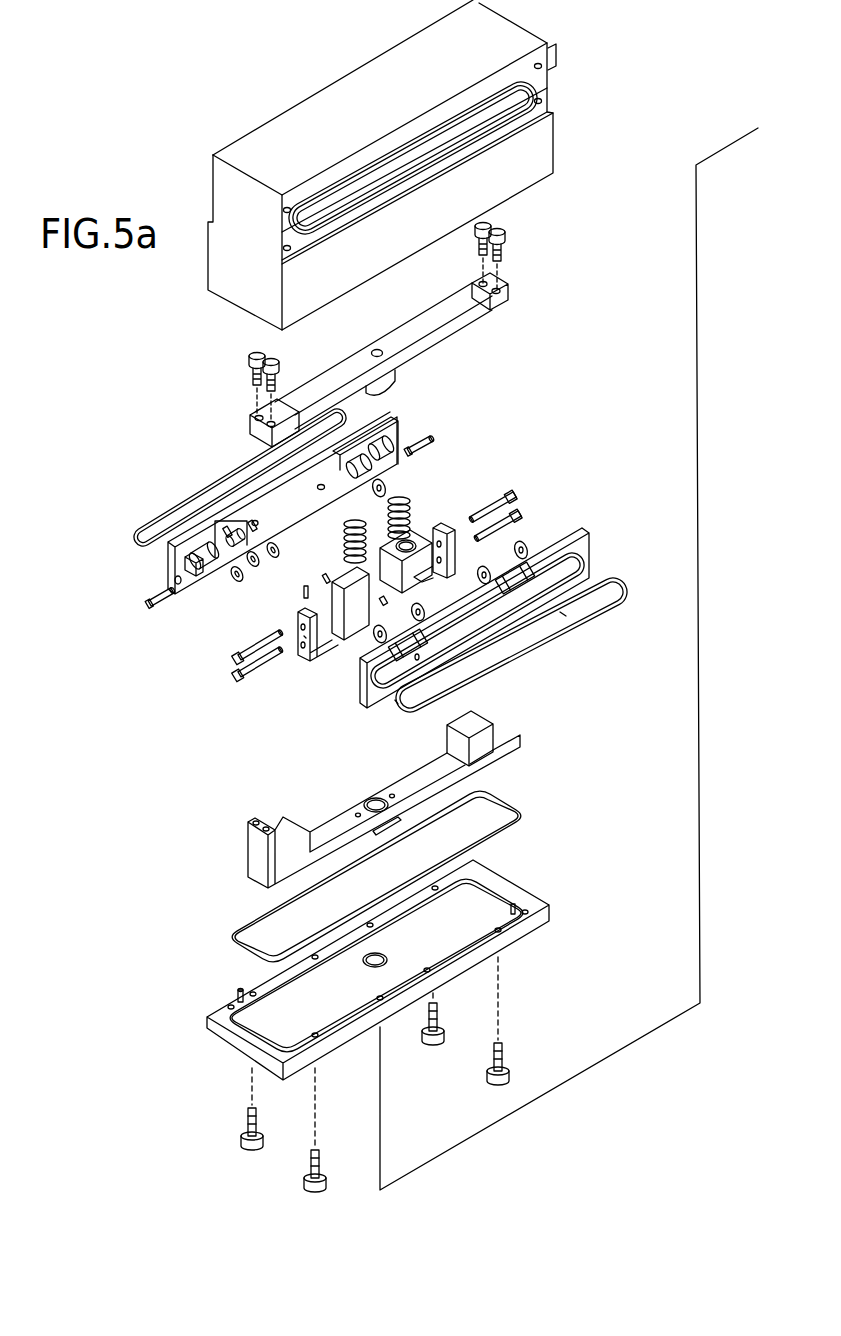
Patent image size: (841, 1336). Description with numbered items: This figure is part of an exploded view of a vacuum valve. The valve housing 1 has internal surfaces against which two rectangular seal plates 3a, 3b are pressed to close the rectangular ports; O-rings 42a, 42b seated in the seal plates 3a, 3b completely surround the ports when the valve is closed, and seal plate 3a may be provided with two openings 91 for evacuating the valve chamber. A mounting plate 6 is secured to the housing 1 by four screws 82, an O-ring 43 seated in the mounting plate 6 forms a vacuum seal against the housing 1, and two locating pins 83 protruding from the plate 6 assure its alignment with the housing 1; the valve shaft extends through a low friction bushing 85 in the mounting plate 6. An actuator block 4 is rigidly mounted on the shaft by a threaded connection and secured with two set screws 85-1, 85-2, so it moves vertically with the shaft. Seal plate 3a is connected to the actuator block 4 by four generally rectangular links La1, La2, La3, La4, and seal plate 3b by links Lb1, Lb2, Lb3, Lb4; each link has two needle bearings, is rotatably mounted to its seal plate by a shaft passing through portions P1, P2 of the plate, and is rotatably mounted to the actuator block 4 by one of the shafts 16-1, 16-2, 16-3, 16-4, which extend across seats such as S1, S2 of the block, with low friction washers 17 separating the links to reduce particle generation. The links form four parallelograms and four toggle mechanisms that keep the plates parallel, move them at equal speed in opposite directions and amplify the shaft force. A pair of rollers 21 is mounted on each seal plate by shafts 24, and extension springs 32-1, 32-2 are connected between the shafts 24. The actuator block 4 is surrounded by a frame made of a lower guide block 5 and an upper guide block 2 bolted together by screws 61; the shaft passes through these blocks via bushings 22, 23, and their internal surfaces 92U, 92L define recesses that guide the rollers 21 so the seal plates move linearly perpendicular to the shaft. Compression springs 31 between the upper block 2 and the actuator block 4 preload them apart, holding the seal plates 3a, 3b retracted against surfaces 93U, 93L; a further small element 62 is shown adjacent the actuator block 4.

The valve housing 1 is at (545, 29).
The upper guide block 2 is at (250, 418).
The seal plate 3a is at (185, 565).
The seal plate 3b is at (362, 694).
The actuator block 4 is at (297, 608).
The lower guide block 5 is at (248, 855).
The mounting plate 6 is at (210, 1030).
The shaft 16-1 is at (238, 657).
The shaft 16-2 is at (238, 673).
The shaft 16-3 is at (520, 514).
The shaft 16-4 is at (511, 493).
The low friction washers 17 is at (362, 672).
The rollers 21 is at (170, 552).
The bushing 22 is at (376, 350).
The bushing 23 is at (365, 802).
The shafts 24 is at (175, 582).
The compression springs 31 is at (364, 542).
The extension spring 32-1 is at (156, 608).
The extension spring 32-2 is at (434, 447).
The O-ring 42a is at (208, 480).
The O-ring 42b is at (614, 590).
The O-ring 43 is at (230, 937).
The screw 61 is at (250, 366).
The pin 62 is at (303, 591).
The screws 82 is at (305, 1188).
The locating pins 83 is at (237, 992).
The low friction bushing 85 is at (386, 957).
The set screw 85-1 is at (326, 578).
The set screw 85-2 is at (392, 602).
The openings 91 is at (321, 491).
The internal surface of upper block 92U is at (545, 322).
The frame surface 93U is at (510, 290).
The internal surface of lower block 92L is at (480, 722).
The frame surface 93L is at (492, 752).
The link La1 is at (212, 524).
The link La2 is at (231, 581).
The link La3 is at (386, 490).
The link La4 is at (346, 462).
The link Lb1 is at (398, 700).
The link Lb2 is at (462, 648).
The link Lb3 is at (526, 541).
The link Lb4 is at (563, 613).
The portion of seal plate P1 is at (226, 531).
The portion of seal plate P2 is at (252, 525).
The seat of actuator block S1 is at (317, 648).
The bracket shaft S2 is at (452, 522).